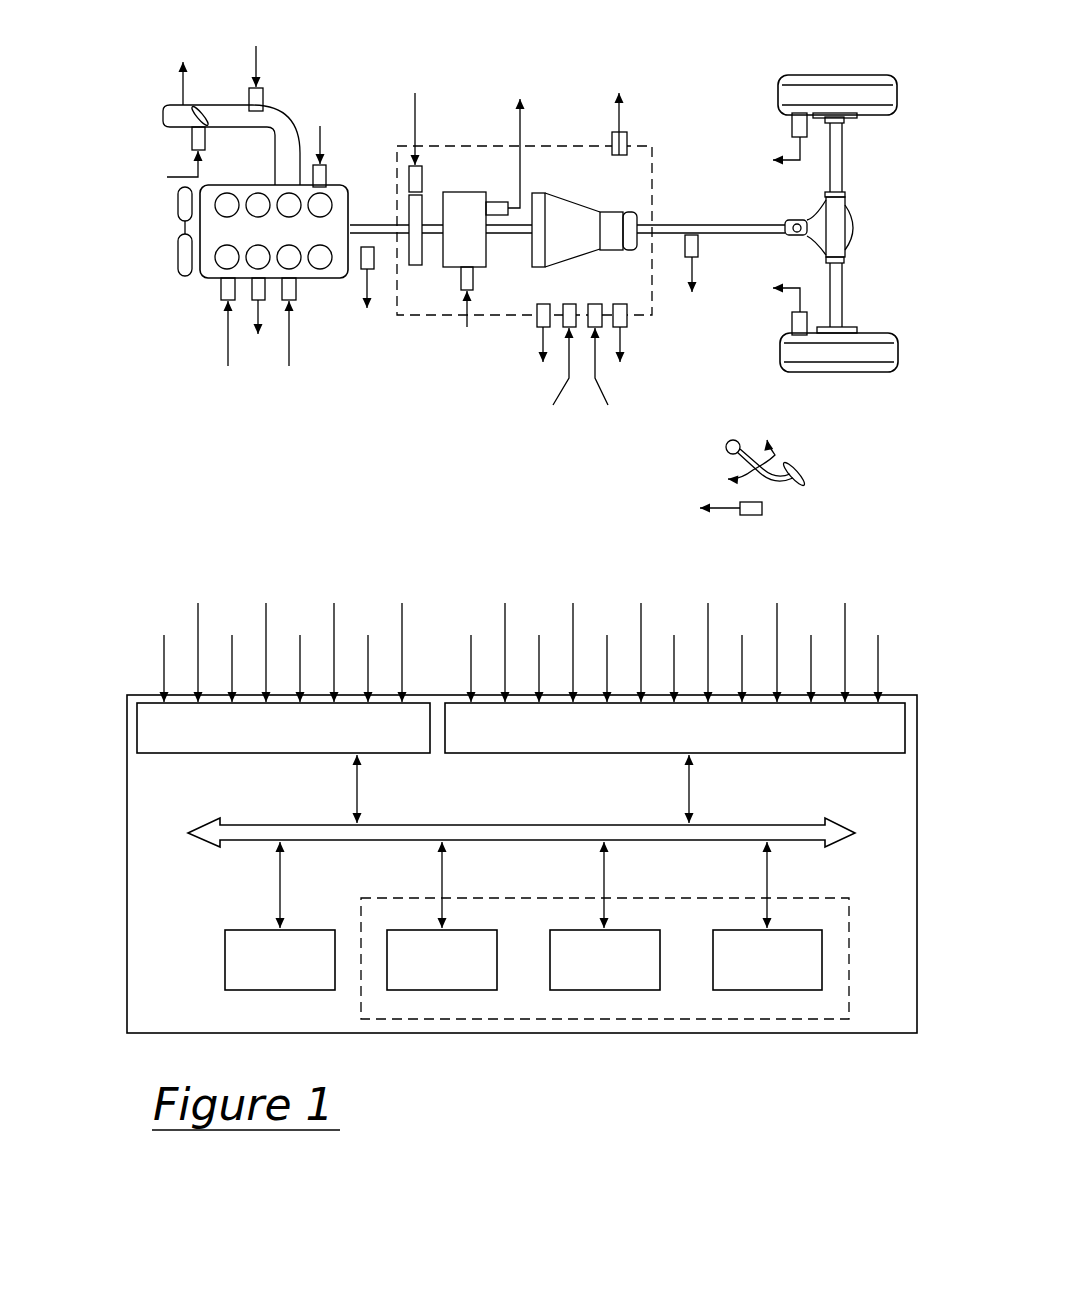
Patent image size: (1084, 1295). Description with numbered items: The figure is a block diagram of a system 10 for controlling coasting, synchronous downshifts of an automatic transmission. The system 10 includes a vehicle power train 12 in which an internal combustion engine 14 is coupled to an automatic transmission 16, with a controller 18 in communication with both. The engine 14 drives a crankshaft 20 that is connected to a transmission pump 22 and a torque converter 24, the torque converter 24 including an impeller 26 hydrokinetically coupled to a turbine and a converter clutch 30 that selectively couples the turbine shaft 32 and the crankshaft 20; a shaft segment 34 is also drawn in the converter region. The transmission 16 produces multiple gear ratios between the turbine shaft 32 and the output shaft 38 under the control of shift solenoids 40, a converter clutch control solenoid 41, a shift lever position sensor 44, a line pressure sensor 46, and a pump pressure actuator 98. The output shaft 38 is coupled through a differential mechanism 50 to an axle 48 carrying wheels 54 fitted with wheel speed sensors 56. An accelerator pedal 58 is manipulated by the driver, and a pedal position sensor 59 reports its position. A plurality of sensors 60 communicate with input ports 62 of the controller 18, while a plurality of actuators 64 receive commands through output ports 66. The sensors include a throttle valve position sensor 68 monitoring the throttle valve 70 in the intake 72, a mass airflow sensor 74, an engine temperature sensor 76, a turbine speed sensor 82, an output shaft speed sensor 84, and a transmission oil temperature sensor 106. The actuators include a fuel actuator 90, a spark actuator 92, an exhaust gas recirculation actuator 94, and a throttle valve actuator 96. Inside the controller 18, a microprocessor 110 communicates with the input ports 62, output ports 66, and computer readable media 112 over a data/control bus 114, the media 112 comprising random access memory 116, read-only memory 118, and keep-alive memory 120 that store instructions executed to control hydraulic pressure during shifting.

The system 10 is at (125, 323).
The vehicle power train 12 is at (467, 386).
The internal combustion engine 14 is at (200, 276).
The automatic transmission 16 is at (667, 183).
The controller 18 is at (863, 1033).
The crankshaft 20 is at (395, 223).
The transmission pump 22 is at (413, 266).
The torque converter 24 is at (445, 285).
The impeller 26 is at (440, 207).
The converter clutch 30 is at (460, 192).
The turbine shaft 32 is at (505, 238).
The turbine shaft 34 is at (433, 234).
The output shaft 38 is at (672, 222).
The shift solenoids 40 is at (582, 427).
The converter clutch control solenoid 41 is at (473, 282).
The shift lever position sensor 44 is at (627, 138).
The line pressure sensor 46 is at (628, 333).
The axle 48 is at (843, 149).
The differential mechanism 50 is at (857, 213).
The wheels 54 is at (833, 373).
The wheel speed sensors 56 is at (789, 328).
The accelerator pedal 58 is at (800, 468).
The pedal position sensor 59 is at (760, 516).
The sensors 60 is at (855, 535).
The input ports 62 is at (790, 755).
The actuators 64 is at (203, 578).
The output ports 66 is at (300, 755).
The throttle valve position sensor 68 is at (183, 98).
The throttle valve 70 is at (213, 118).
The intake 72 is at (298, 108).
The mass airflow sensor 74 is at (263, 102).
The temperature sensor 76 is at (228, 318).
The turbine speed sensor 82 is at (500, 202).
The output shaft speed sensor 84 is at (698, 248).
The fuel actuator 90 is at (228, 356).
The spark actuator 92 is at (289, 330).
The exhaust gas recirculation actuator 94 is at (326, 173).
The throttle valve actuator 96 is at (192, 138).
The pump pressure sensor 98 is at (409, 178).
The temperature sensor 106 is at (542, 332).
The microprocessor 110 is at (257, 930).
The computer readable media 112 is at (849, 945).
The data/control bus 114 is at (517, 823).
The random access memory 116 is at (798, 930).
The read-only memory 118 is at (635, 930).
The keep-alive memory 120 is at (420, 930).